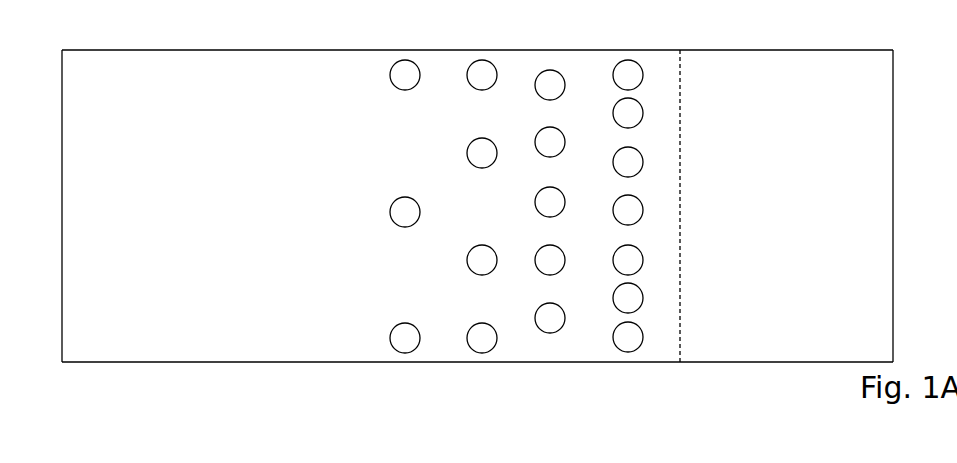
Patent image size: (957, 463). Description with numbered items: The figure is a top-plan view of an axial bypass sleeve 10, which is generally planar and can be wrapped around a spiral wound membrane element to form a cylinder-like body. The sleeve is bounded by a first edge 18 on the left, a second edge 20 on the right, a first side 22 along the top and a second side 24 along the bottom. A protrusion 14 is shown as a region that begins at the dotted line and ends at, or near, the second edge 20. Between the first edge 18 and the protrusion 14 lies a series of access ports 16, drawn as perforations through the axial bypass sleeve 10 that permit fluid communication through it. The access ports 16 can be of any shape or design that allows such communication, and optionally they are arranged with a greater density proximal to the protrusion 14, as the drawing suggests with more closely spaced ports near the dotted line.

The axial bypass sleeve 10 is at (494, 223).
The protrusion 14 is at (876, 212).
The access port 16 is at (537, 312).
The first edge 18 is at (61, 229).
The second edge 20 is at (894, 333).
The first side 22 is at (544, 50).
The second side 24 is at (327, 363).